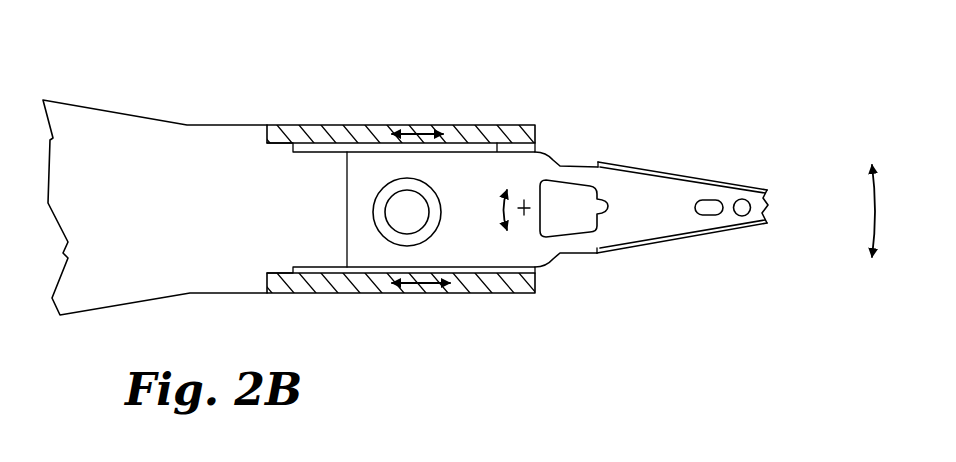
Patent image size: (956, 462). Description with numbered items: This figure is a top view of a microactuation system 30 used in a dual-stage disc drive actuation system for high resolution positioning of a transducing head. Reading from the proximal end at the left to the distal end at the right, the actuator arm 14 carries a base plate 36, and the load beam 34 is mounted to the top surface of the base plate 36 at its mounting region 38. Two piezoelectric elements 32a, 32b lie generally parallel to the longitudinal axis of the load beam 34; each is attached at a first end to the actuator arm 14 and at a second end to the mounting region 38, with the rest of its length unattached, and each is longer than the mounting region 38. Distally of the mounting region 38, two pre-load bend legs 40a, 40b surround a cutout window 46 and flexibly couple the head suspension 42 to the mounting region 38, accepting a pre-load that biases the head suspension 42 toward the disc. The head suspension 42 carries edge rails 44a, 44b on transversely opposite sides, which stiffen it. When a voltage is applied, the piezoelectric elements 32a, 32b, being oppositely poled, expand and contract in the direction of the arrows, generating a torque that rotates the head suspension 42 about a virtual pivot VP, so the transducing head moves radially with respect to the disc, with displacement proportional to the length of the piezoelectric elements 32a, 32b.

The actuator arm 14 is at (117, 127).
The microactuation system 30 is at (750, 302).
The piezoelectric element 32a is at (293, 135).
The piezoelectric element 32b is at (497, 285).
The load beam 34 is at (548, 120).
The base plate 36 is at (397, 237).
The mounting region 38 is at (363, 257).
The pre-load bend leg 40a is at (557, 167).
The pre-load bend leg 40b is at (572, 242).
The head suspension 42 is at (687, 215).
The edge rail 44a is at (643, 168).
The edge rail 44b is at (643, 250).
The cutout window 46 is at (563, 230).
The virtual pivot VP is at (523, 203).